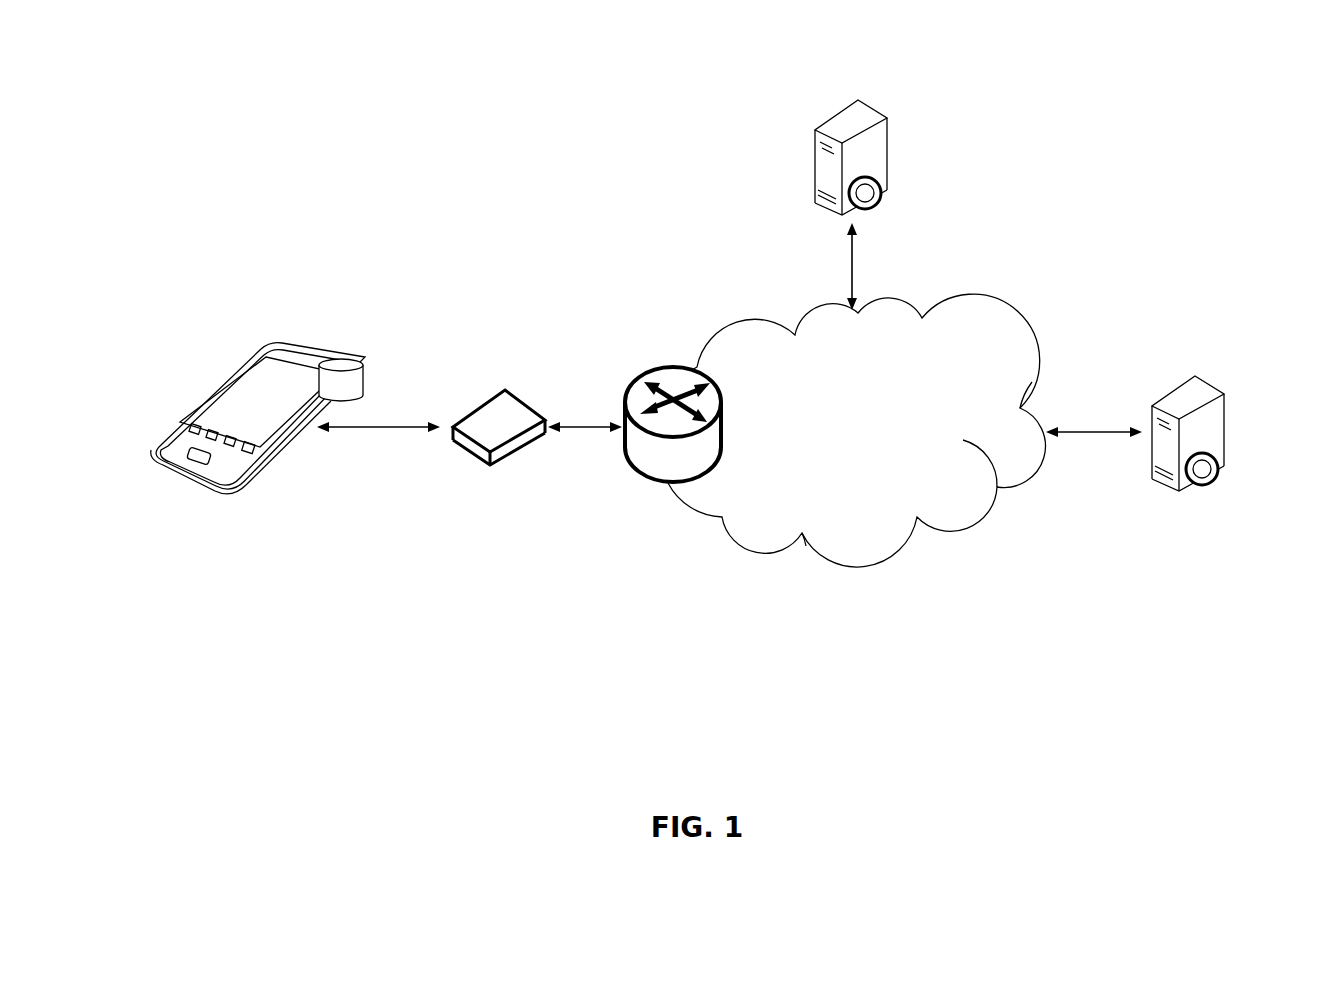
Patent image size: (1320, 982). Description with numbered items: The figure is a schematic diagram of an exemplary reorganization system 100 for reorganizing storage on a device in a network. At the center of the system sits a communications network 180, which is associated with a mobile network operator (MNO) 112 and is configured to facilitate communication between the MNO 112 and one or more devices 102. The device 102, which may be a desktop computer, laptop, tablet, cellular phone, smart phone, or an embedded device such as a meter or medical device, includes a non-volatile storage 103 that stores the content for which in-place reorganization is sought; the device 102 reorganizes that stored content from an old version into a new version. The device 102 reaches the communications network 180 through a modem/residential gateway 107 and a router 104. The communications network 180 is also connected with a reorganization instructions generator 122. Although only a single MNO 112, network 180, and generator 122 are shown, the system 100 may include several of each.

The reorganization system 100 is at (189, 82).
The device 102 is at (243, 370).
The non-volatile storage 103 is at (367, 378).
The router 104 is at (672, 367).
The modem/residential gateway 107 is at (515, 393).
The mobile network operator (MNO) 112 is at (888, 153).
The reorganization instructions generator 122 is at (1167, 397).
The communications network 180 is at (850, 570).